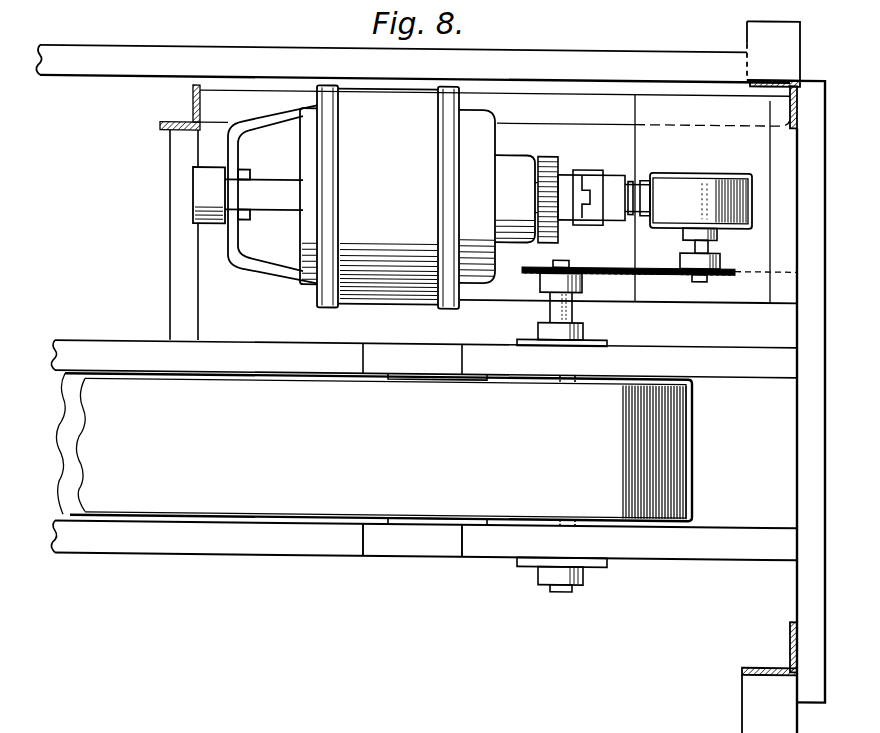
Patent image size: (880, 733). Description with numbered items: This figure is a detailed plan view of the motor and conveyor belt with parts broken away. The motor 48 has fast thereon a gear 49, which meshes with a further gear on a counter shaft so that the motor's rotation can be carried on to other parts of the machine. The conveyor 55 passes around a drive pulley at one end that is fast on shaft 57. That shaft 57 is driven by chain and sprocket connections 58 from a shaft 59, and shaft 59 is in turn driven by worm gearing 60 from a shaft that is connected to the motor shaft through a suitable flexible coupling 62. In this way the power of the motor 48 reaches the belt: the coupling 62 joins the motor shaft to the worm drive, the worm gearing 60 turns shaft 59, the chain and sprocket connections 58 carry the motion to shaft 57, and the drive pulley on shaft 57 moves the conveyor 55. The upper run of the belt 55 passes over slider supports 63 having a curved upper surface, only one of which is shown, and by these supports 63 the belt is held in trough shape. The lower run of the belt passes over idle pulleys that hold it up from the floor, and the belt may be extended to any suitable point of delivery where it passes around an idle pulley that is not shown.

The motor 48 is at (400, 149).
The gear 49 is at (548, 151).
The conveyor 55 is at (374, 447).
The shaft 57 is at (560, 306).
The chain and sprocket connections 58 is at (603, 259).
The shaft 59 is at (710, 239).
The worm gearing 60 is at (701, 201).
The flexible coupling 62 is at (582, 169).
The slider support 63 is at (430, 536).